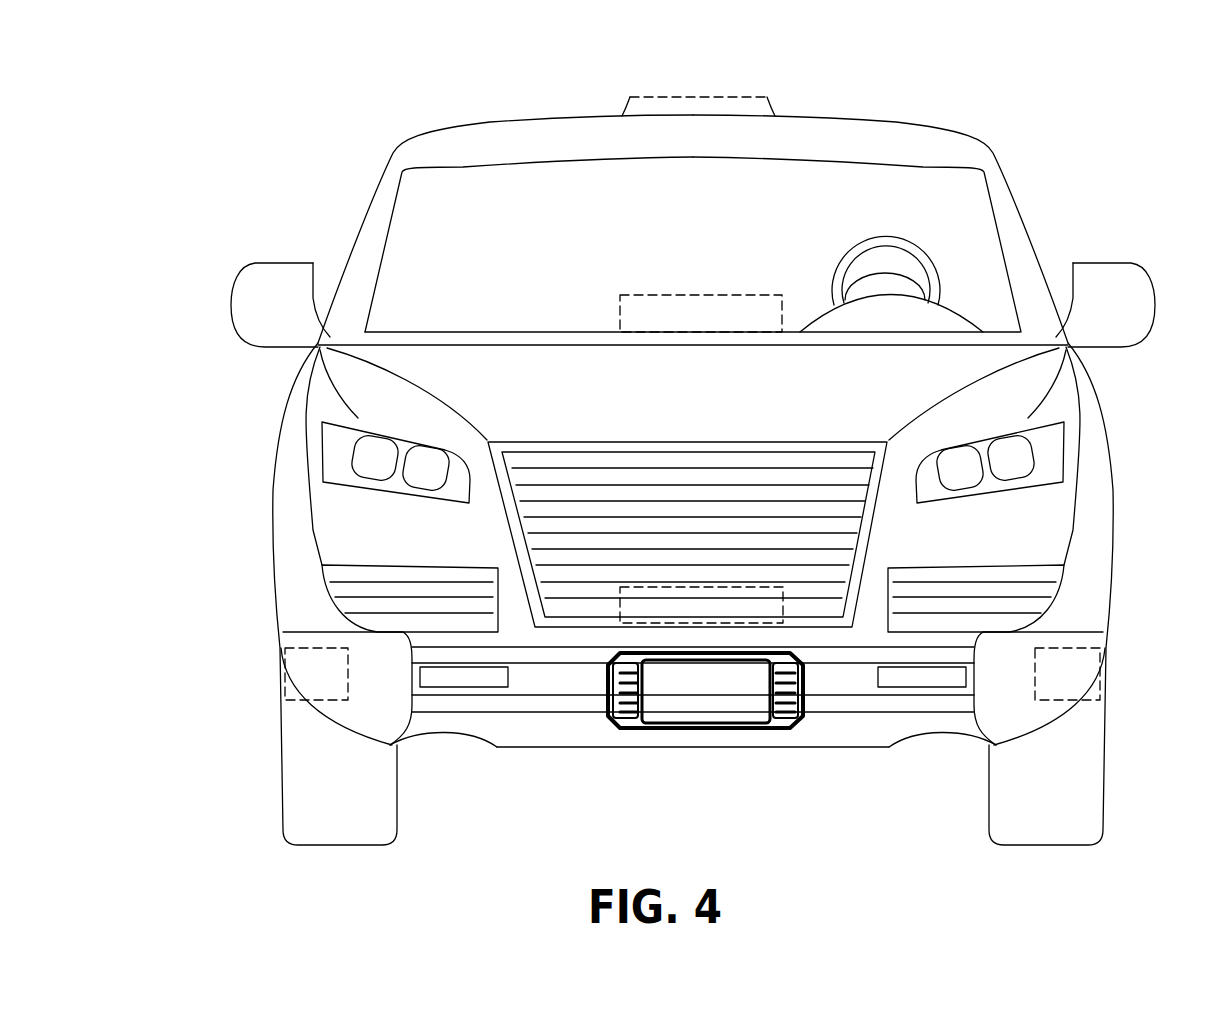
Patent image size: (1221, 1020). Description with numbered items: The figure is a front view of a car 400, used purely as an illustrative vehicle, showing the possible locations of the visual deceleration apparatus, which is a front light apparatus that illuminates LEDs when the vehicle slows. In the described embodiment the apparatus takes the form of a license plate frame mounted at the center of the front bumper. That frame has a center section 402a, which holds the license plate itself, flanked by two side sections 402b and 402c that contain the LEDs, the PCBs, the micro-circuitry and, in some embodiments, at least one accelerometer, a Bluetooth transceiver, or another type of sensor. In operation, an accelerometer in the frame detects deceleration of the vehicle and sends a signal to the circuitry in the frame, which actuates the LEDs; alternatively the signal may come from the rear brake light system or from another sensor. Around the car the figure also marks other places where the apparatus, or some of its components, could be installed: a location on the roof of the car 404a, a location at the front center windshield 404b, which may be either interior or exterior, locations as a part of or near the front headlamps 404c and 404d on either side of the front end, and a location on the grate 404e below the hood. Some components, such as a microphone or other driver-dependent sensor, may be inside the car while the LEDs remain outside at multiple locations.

The car 400 is at (252, 178).
The center section 402a is at (707, 728).
The side section 402b is at (790, 718).
The side section 402c is at (628, 718).
The roof location 404a is at (711, 96).
The front center windshield location 404b is at (724, 294).
The front headlamp location 404c is at (1047, 700).
The front headlamp location 404d is at (337, 700).
The grate location 404e is at (787, 602).